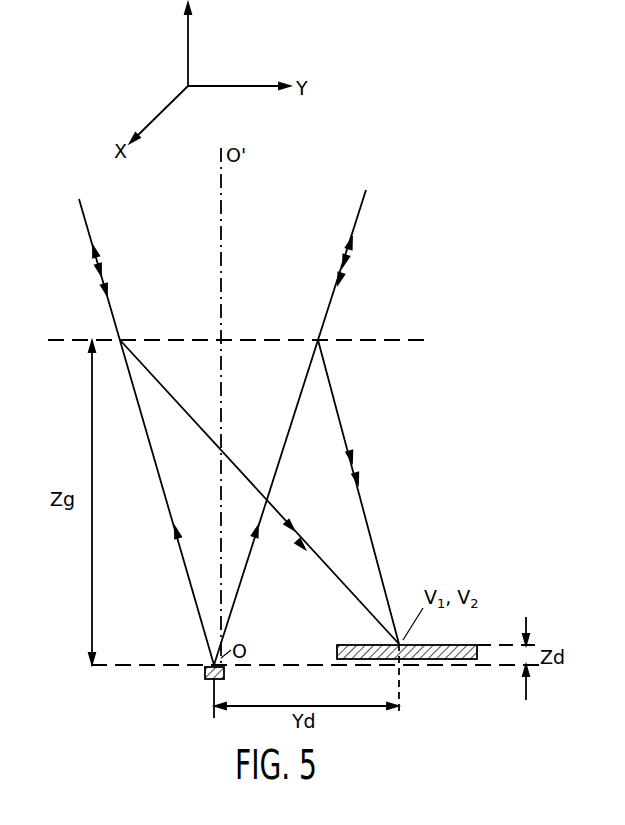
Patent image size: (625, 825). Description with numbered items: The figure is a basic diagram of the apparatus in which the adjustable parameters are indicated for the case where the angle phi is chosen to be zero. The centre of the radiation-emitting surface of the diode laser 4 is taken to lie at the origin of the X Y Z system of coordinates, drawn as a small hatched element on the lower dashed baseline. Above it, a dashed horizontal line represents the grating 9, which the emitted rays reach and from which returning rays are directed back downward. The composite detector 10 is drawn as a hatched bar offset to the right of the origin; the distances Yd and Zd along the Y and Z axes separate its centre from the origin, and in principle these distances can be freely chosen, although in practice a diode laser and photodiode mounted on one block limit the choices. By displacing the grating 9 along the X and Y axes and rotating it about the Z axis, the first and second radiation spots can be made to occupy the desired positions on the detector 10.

The diode laser 4 is at (205, 677).
The grating 9 is at (249, 342).
The detector 10 is at (453, 649).